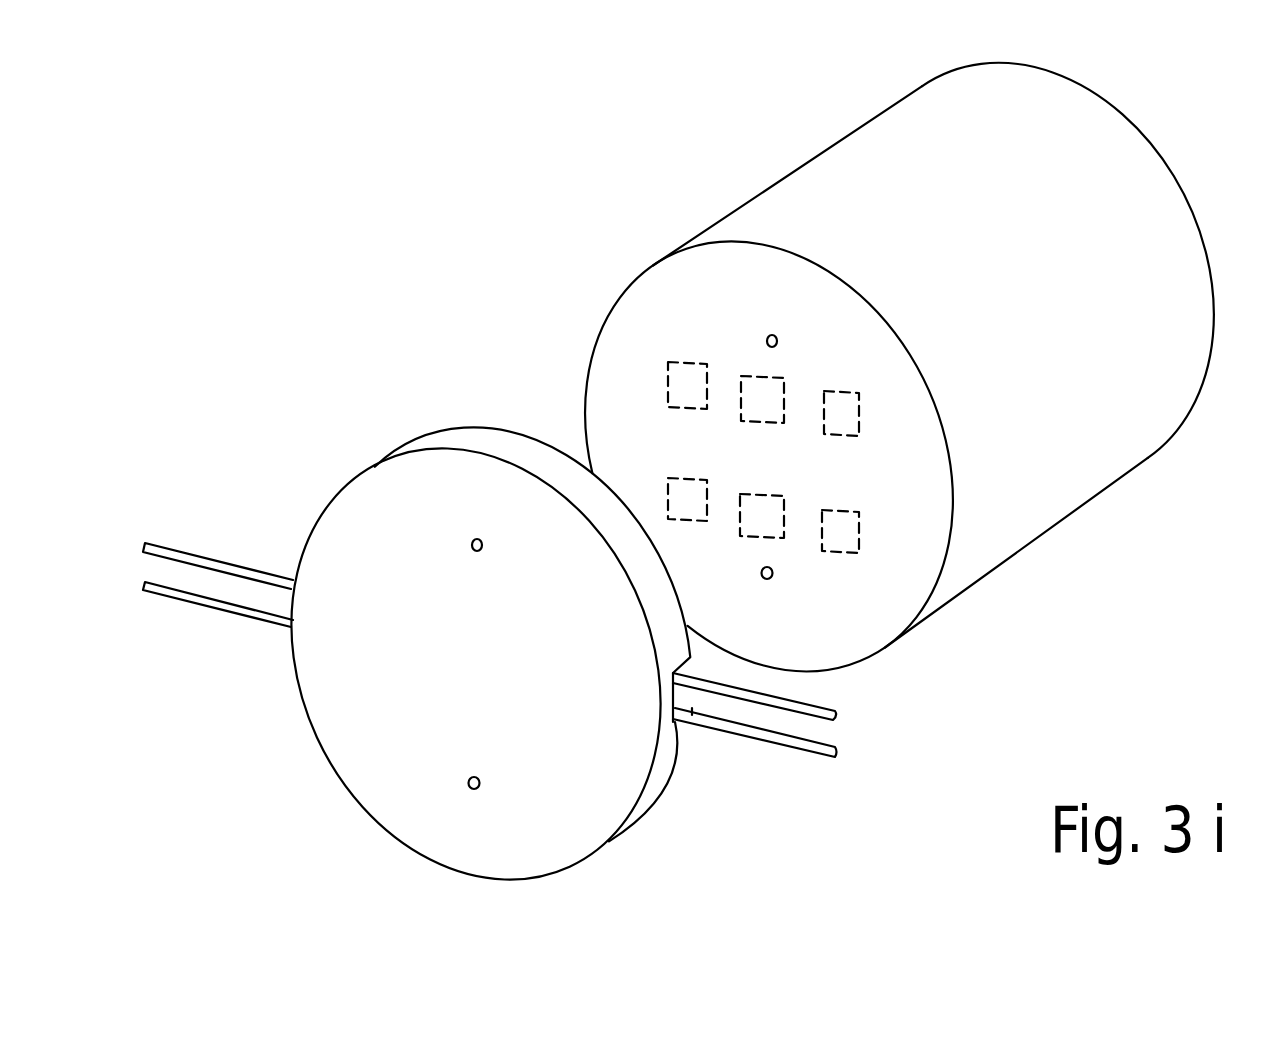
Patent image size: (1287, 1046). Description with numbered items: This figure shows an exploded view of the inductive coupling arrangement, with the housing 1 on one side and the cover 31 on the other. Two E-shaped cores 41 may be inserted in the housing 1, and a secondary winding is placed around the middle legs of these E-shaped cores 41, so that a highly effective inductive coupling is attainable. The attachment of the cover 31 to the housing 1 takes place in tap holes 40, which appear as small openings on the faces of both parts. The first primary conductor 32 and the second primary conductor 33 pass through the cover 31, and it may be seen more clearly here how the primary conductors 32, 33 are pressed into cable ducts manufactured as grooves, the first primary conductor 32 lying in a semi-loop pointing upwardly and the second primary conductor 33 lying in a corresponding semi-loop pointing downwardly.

The housing 1 is at (970, 182).
The tap holes 40 is at (764, 568).
The E-shaped cores 41 is at (845, 408).
The cover 31 is at (386, 565).
The first primary conductor 32 is at (797, 701).
The second primary conductor 33 is at (753, 742).